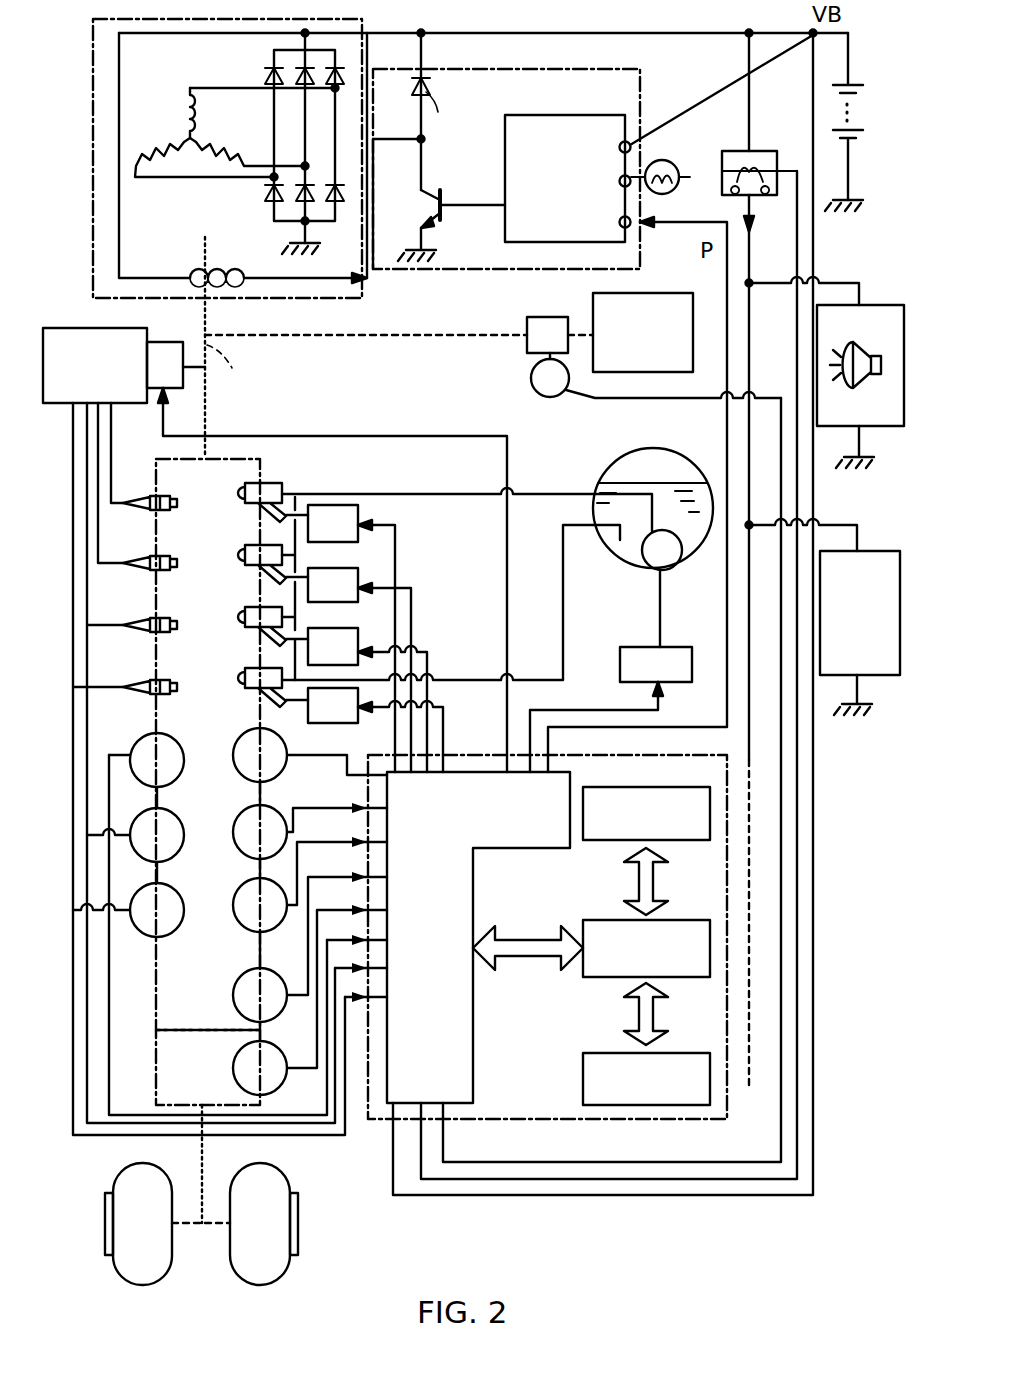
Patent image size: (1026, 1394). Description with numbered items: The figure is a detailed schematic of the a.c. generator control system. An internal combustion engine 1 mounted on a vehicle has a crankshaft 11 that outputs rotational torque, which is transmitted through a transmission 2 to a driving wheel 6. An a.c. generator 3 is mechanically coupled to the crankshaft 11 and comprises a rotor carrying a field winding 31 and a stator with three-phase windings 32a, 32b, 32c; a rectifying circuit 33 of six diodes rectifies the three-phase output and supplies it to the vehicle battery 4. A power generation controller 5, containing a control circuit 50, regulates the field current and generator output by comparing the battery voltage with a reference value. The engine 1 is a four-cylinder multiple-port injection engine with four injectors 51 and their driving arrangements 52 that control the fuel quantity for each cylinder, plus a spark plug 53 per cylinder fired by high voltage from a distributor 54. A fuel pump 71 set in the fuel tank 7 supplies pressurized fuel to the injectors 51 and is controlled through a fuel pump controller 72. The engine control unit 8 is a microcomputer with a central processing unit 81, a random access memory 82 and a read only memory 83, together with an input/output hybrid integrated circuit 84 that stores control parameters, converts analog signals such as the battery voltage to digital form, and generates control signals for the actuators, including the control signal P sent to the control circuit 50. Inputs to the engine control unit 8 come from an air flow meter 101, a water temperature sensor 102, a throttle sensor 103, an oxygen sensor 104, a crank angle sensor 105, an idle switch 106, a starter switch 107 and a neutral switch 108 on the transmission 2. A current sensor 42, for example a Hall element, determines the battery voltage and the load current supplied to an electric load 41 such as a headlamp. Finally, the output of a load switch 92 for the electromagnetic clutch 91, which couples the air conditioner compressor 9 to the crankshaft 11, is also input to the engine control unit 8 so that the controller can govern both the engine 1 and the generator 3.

The internal combustion engine 1 is at (156, 985).
The transmission 2 is at (156, 1062).
The a.c. generator 3 is at (365, 298).
The vehicle battery 4 is at (854, 82).
The power generation controller 5 is at (440, 270).
The driving wheel 6 is at (160, 1178).
The fuel tank 7 is at (672, 455).
The engine control unit (ECU) 8 is at (618, 760).
The compressor 9 is at (660, 293).
The crankshaft 11 is at (232, 367).
The field winding 31 is at (200, 272).
The three-phase winding 32a is at (188, 96).
The three-phase winding 32b is at (226, 152).
The three-phase winding 32c is at (164, 154).
The rectifying circuit 33 is at (268, 78).
The electric load 41 is at (870, 302).
The current sensor 42 is at (730, 150).
The power generation controller (control circuit) 50 is at (528, 114).
The injector 51 is at (238, 507).
The driving arrangement 52 is at (362, 512).
The spark plug 53 is at (172, 496).
The distributor 54 is at (150, 340).
The fuel pump 71 is at (652, 568).
The fuel pump controller 72 is at (690, 642).
The central processing unit (CPU) 81 is at (588, 978).
The random access memory (RAM) 82 is at (672, 842).
The read only memory (ROM) 83 is at (583, 1064).
The input/output hybrid integrated circuit (I/O LSI) 84 is at (497, 850).
The electromagnetic clutch 91 is at (556, 310).
The load switch 92 is at (530, 381).
The air flow meter 101 is at (136, 742).
The water temperature sensor 102 is at (280, 777).
The throttle sensor 103 is at (176, 816).
The O2 sensor 104 is at (233, 832).
The crank angle sensor 105 is at (200, 904).
The idle switch 106 is at (240, 923).
The starter switch 107 is at (234, 983).
The neutral switch 108 is at (234, 1057).